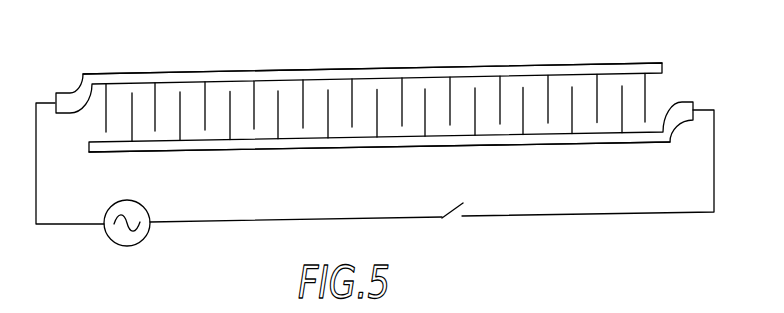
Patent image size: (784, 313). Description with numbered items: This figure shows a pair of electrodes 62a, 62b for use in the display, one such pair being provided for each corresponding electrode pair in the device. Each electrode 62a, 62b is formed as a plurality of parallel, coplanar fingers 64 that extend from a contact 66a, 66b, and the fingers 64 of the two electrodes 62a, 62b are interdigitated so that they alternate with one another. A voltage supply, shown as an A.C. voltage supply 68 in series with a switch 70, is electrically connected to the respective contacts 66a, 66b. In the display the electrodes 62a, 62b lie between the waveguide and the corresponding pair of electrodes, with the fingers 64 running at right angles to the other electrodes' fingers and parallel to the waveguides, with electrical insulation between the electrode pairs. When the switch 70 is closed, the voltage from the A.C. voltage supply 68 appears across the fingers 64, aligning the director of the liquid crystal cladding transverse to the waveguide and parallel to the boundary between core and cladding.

The electrode 62a is at (532, 64).
The electrode 62b is at (603, 147).
The fingers 64 is at (426, 100).
The contact 66a is at (276, 73).
The contact 66b is at (308, 148).
The A.C. voltage supply 68 is at (147, 234).
The switch 70 is at (453, 220).